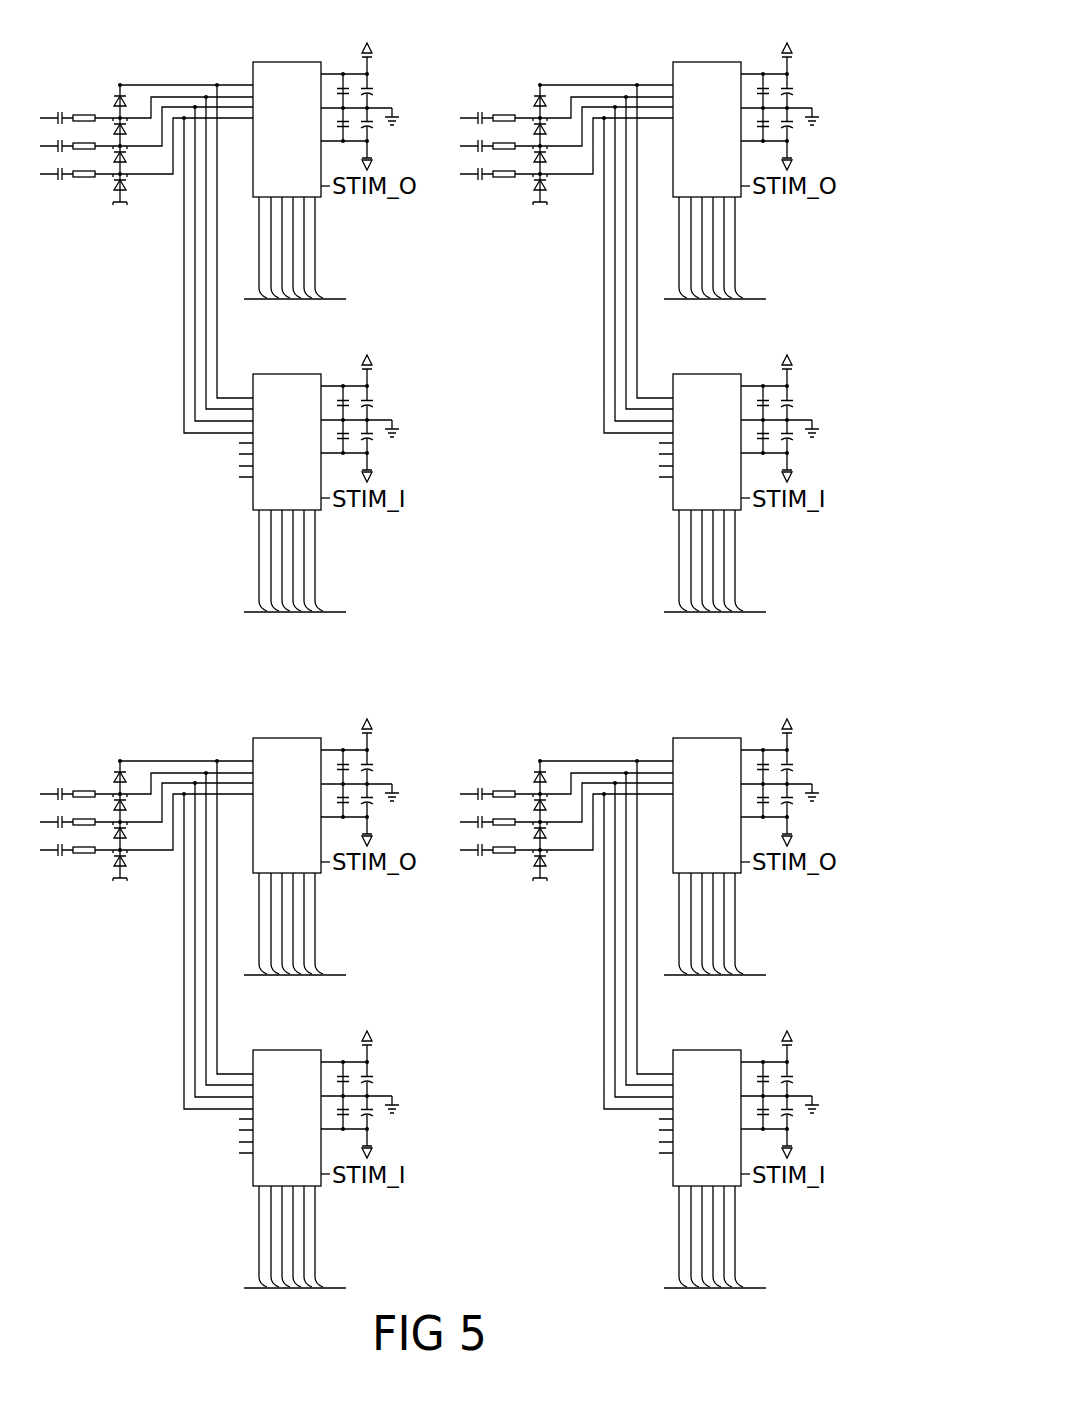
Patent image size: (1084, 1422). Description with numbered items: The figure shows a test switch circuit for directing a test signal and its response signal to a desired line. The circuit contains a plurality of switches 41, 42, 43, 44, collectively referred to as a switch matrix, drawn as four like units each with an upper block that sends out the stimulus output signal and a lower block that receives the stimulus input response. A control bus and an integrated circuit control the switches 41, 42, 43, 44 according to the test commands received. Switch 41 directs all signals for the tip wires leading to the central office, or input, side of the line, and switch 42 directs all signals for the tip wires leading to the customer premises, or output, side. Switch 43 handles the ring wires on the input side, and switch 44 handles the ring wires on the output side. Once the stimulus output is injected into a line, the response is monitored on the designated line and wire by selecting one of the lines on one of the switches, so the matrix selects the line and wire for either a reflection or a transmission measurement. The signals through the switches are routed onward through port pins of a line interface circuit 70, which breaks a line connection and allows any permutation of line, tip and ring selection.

The line interface circuit 70 is at (474, 646).
The switch 41 is at (248, 67).
The switch 42 is at (667, 67).
The switch 43 is at (179, 1014).
The switch 44 is at (657, 1116).